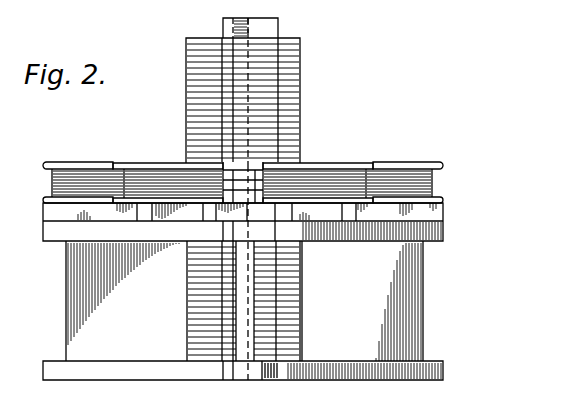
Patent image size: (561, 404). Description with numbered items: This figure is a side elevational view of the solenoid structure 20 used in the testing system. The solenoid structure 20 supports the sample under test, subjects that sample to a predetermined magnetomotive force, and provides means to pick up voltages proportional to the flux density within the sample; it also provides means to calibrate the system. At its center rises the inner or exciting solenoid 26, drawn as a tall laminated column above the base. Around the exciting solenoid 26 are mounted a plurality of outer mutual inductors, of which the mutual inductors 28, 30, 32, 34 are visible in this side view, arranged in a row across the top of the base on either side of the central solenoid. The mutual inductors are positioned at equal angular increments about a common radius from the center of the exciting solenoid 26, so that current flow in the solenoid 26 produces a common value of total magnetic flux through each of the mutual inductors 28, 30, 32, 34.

The solenoid structure 20 is at (424, 318).
The exciting solenoid 26 is at (297, 100).
The mutual inductor 28 is at (418, 163).
The mutual inductor 30 is at (345, 163).
The mutual inductor 32 is at (170, 133).
The mutual inductor 34 is at (95, 143).